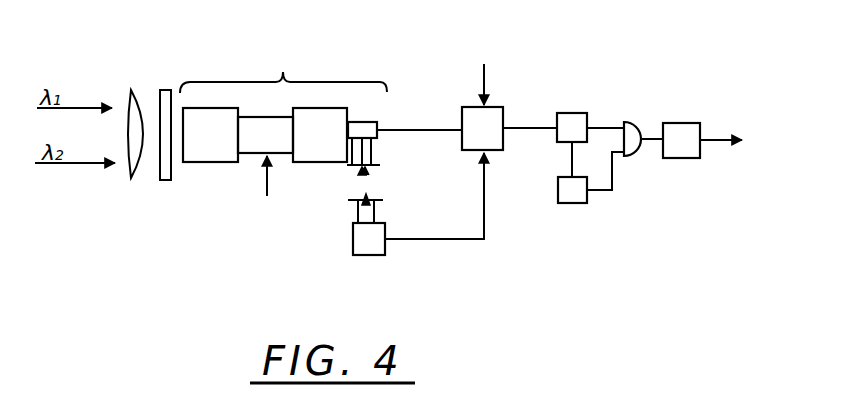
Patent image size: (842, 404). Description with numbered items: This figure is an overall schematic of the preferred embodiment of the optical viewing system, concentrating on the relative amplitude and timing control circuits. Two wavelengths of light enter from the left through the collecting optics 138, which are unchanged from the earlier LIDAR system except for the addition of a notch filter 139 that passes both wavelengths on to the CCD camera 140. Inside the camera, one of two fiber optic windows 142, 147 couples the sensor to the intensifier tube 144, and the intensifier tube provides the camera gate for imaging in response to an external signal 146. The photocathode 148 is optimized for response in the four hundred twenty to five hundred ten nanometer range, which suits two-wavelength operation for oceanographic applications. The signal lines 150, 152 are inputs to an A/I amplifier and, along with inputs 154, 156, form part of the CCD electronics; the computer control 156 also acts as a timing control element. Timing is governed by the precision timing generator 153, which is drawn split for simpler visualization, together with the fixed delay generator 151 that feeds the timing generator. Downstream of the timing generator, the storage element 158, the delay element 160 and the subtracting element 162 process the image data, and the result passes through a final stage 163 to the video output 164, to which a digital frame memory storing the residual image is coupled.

The collecting optics 138 is at (130, 173).
The notch filter 139 is at (163, 181).
The CCD camera 140 is at (283, 68).
The fiber optic window 142 is at (222, 163).
The intensifier tube 144 is at (267, 116).
The external signal 146 is at (262, 190).
The fiber optic window 147 is at (328, 163).
The photocathode 148 is at (381, 104).
The A/I amplifier input 150 is at (396, 139).
The fixed delay generator 151 is at (353, 243).
The A/I amplifier input 152 is at (393, 242).
The precision timing generator 153 is at (508, 104).
The input 154 is at (407, 205).
The computer control 156 is at (482, 72).
The storage element 158 is at (571, 112).
The delay element 160 is at (570, 203).
The subtracting element 162 is at (633, 156).
The output register 163 is at (675, 123).
The video output 164 is at (746, 142).